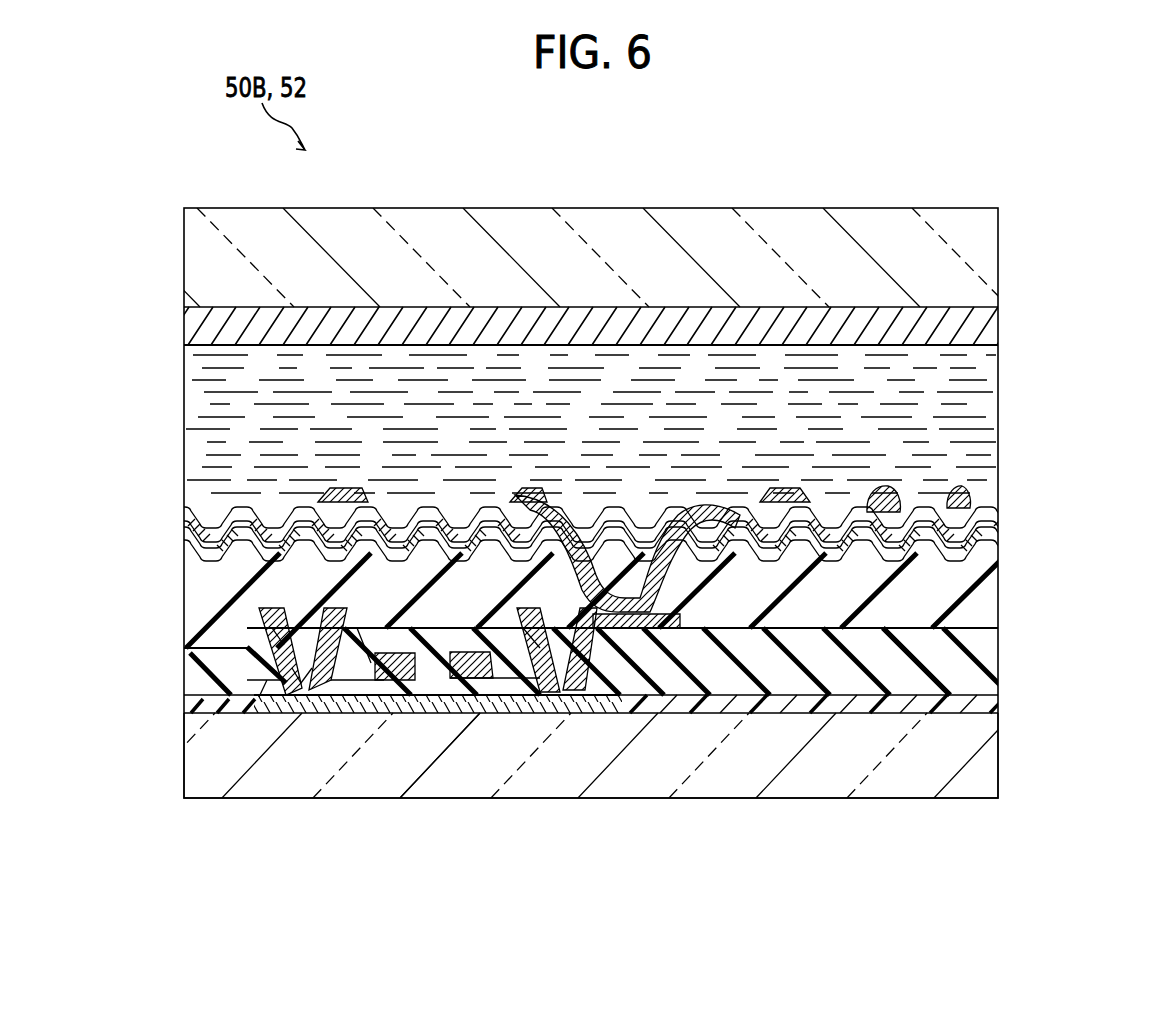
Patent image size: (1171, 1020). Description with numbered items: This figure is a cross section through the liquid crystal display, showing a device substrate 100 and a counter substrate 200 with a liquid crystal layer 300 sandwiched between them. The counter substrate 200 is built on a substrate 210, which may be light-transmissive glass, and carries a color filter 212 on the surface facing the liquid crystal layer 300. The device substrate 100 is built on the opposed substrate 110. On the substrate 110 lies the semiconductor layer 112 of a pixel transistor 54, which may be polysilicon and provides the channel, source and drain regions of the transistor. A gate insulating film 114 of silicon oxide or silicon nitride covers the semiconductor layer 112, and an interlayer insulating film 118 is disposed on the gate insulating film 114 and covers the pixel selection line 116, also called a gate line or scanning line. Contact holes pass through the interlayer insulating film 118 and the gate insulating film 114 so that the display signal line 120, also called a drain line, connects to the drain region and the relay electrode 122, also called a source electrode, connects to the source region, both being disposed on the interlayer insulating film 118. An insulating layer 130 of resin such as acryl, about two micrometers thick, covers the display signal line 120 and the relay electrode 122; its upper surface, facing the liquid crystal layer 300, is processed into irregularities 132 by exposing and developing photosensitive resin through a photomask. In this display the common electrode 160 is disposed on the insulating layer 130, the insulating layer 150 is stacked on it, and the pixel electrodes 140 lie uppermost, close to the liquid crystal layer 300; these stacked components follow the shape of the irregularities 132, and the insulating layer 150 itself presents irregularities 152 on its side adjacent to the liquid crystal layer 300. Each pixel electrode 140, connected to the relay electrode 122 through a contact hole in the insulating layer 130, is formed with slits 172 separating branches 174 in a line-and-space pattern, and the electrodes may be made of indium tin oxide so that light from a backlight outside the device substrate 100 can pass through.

The counter substrate 200 is at (964, 170).
The substrate 210 is at (877, 222).
The color filter 212 is at (678, 318).
The liquid crystal layer 300 is at (998, 370).
The pixel electrodes 140 is at (998, 512).
The insulating layer 150 is at (998, 535).
The common electrode 160 is at (998, 570).
The branches 174 is at (870, 503).
The slits 172 is at (933, 500).
The irregularities 152 is at (728, 520).
The irregularities 132 is at (998, 603).
The insulating layer 130 is at (793, 612).
The interlayer insulating film 118 is at (900, 657).
The gate insulating film 114 is at (998, 705).
The semiconductor layer 112 is at (505, 713).
The display signal line 120 is at (305, 685).
The pixel selection line 116 is at (388, 697).
The relay electrode 122 is at (623, 615).
The substrate 110 is at (982, 765).
The pixel transistor 54 is at (427, 764).
The device substrate 100 is at (999, 815).